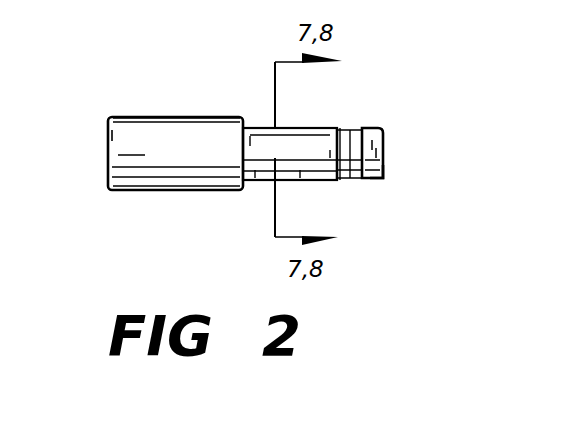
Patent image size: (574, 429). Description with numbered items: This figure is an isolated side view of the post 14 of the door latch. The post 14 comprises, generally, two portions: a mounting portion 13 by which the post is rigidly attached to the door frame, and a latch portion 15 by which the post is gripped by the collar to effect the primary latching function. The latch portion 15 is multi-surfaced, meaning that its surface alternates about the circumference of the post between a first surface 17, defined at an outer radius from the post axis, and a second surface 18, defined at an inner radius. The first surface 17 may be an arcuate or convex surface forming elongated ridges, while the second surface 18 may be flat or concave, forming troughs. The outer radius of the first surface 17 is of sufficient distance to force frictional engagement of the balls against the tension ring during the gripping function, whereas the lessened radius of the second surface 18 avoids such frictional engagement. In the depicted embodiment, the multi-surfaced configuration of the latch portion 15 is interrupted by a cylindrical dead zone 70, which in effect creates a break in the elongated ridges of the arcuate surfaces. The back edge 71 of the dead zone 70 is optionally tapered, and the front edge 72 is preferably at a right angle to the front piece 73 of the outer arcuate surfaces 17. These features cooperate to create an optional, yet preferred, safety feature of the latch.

The mounting portion 13 is at (155, 134).
The post 14 is at (218, 106).
The latch portion 15 is at (349, 192).
The first surface 17 is at (258, 126).
The second surface 18 is at (306, 126).
The dead zone 70 is at (350, 137).
The back edge 71 is at (344, 145).
The front edge 72 is at (360, 128).
The front piece 73 is at (383, 173).